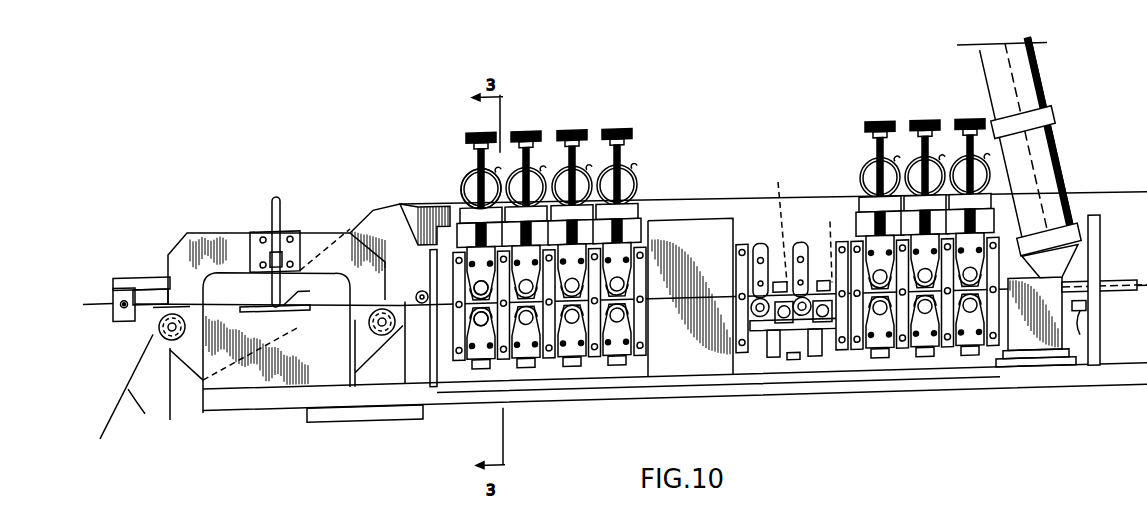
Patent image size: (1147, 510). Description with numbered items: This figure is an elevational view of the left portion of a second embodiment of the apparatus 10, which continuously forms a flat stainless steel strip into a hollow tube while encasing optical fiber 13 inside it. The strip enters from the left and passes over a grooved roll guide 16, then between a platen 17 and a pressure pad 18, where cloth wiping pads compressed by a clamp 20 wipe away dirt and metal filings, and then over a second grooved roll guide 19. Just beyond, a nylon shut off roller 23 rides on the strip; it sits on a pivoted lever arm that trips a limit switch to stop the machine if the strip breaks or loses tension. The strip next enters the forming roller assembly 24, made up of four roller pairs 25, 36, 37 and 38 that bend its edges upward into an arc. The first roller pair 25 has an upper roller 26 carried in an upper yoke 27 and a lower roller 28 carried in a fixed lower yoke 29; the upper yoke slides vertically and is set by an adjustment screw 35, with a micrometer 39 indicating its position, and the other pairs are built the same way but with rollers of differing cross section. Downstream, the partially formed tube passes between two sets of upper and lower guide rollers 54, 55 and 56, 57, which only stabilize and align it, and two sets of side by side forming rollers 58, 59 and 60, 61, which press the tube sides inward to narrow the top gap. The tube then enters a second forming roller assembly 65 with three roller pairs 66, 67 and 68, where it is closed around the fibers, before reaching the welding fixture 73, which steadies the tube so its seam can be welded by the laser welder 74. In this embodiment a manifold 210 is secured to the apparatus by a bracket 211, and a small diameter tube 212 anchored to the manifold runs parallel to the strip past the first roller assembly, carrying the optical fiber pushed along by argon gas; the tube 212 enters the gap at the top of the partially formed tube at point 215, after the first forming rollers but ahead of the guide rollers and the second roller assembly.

The apparatus 10 is at (762, 136).
The optical fiber 13 is at (91, 288).
The grooved roll guide 16 is at (160, 290).
The platen 17 is at (283, 298).
The pressure pad 18 is at (258, 295).
The second grooved roll guide 19 is at (387, 332).
The clamp 20 is at (282, 194).
The shut off roller 23 is at (416, 291).
The forming roller assembly 24 is at (657, 362).
The first roller pair 25 is at (472, 360).
The upper roller 26 is at (473, 270).
The upper yoke 27 is at (437, 253).
The lower roller 28 is at (475, 336).
The lower yoke 29 is at (452, 345).
The adjustment screw 35 is at (470, 203).
The roller pair 36 is at (522, 361).
The roller pair 37 is at (567, 362).
The roller pair 38 is at (612, 363).
The micrometer 39 is at (462, 176).
The upper guide roller 54 is at (768, 288).
The lower guide roller 55 is at (773, 316).
The upper guide roller 56 is at (812, 289).
The lower guide roller 57 is at (822, 329).
The side by side forming roller 58 is at (779, 225).
The side by side forming roller 59 is at (768, 332).
The side by side forming roller 60 is at (834, 244).
The side by side forming roller 61 is at (835, 307).
The second forming roller assembly 65 is at (855, 202).
The roller pair 66 is at (870, 358).
The roller pair 67 is at (915, 359).
The roller pair 68 is at (958, 360).
The welding fixture 73 is at (1033, 355).
The laser welder 74 is at (1055, 164).
The manifold 210 is at (132, 386).
The bracket 211 is at (123, 266).
The small diameter tube 212 is at (332, 302).
The point 215 is at (695, 291).